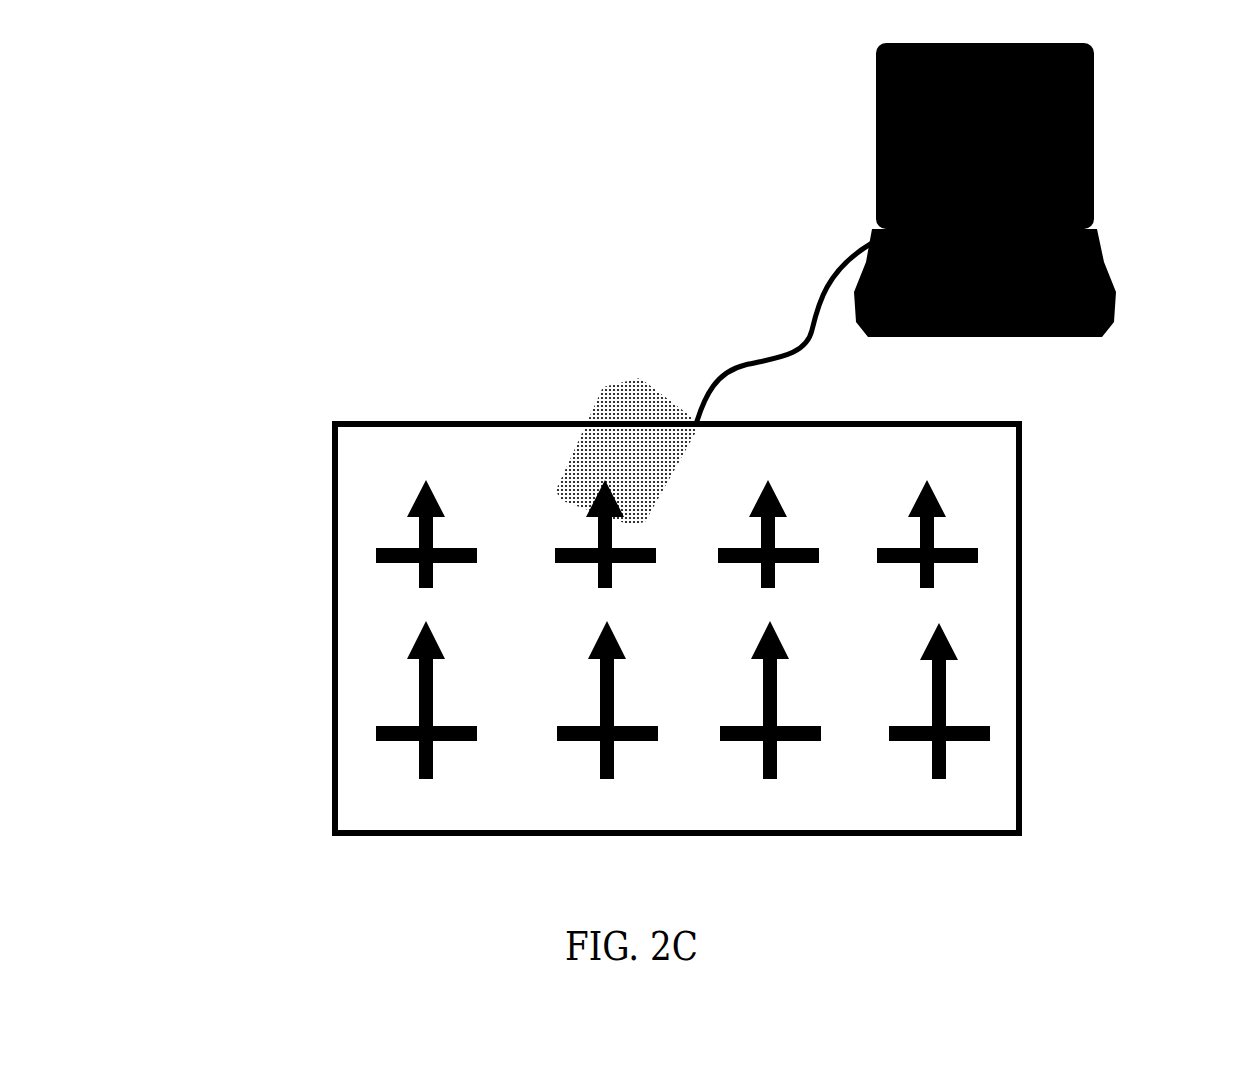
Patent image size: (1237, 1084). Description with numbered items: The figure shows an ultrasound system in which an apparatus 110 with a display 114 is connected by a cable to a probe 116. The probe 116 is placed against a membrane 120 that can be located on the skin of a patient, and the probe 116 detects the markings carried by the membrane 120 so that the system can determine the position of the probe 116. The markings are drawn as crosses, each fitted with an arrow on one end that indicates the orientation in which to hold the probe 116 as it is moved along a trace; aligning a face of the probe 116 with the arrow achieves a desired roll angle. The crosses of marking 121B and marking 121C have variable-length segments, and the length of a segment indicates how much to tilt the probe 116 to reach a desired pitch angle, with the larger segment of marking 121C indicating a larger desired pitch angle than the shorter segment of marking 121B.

The apparatus 110 is at (1087, 183).
The display 114 is at (887, 122).
The probe 116 is at (632, 432).
The membrane 120 is at (330, 472).
The marking 121B is at (977, 548).
The marking 121C is at (955, 650).